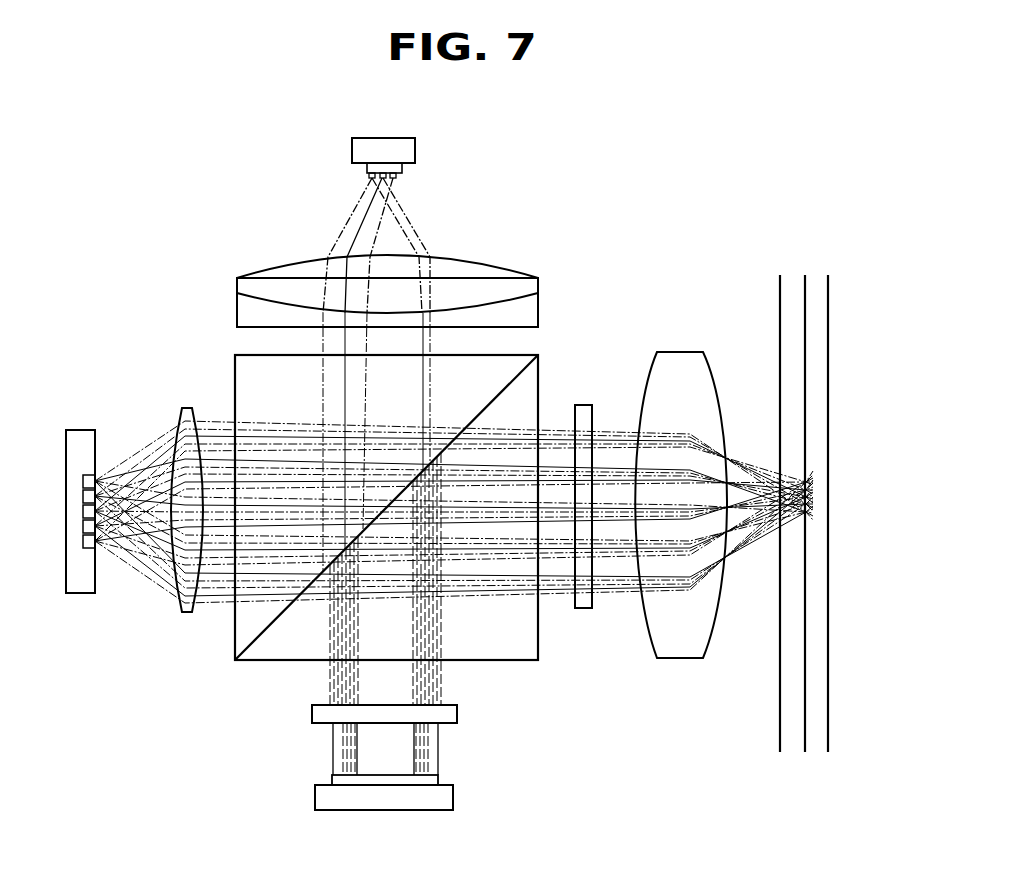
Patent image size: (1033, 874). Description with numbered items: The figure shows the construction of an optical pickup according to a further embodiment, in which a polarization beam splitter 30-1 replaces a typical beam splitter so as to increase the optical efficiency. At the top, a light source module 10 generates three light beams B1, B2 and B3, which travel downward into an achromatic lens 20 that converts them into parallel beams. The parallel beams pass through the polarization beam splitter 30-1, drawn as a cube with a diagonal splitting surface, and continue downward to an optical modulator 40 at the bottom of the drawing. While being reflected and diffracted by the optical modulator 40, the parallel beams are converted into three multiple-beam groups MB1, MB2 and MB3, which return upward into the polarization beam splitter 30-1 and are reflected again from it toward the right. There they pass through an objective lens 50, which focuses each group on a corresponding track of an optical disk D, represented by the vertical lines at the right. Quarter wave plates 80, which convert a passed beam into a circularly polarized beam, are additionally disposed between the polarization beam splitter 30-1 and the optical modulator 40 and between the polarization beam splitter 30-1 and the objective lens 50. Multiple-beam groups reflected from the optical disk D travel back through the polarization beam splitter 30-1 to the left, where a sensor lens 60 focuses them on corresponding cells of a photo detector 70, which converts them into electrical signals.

The light source module 10 is at (408, 148).
The achromatic lens 20 is at (485, 283).
The polarization beam splitter 30-1 is at (521, 400).
The optical modulator 40 is at (330, 798).
The objective lens 50 is at (687, 355).
The sensor lens 60 is at (192, 410).
The photo detector 70 is at (78, 430).
The quarter wave plate 80 is at (583, 610).
The light beam B1 is at (363, 235).
The light beam B2 is at (358, 208).
The light beam B3 is at (420, 238).
The optical disk D is at (828, 318).
The multiple-beam group MB1 is at (440, 768).
The multiple-beam group MB2 is at (328, 743).
The multiple-beam group MB3 is at (440, 755).